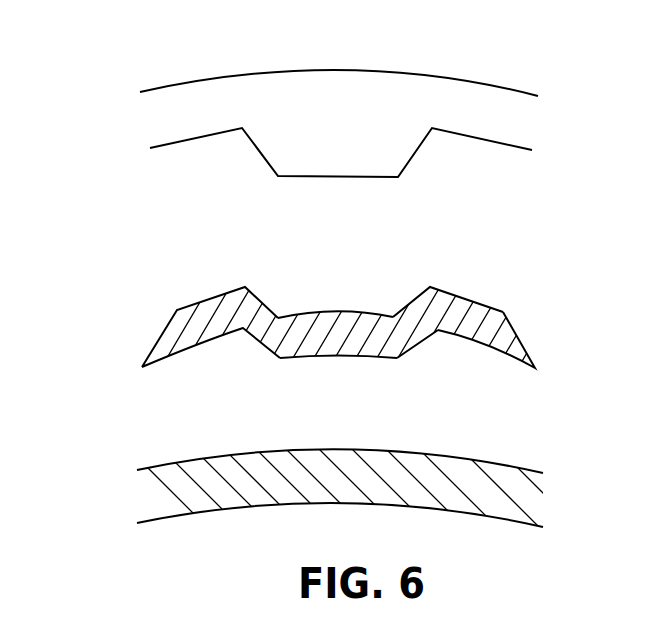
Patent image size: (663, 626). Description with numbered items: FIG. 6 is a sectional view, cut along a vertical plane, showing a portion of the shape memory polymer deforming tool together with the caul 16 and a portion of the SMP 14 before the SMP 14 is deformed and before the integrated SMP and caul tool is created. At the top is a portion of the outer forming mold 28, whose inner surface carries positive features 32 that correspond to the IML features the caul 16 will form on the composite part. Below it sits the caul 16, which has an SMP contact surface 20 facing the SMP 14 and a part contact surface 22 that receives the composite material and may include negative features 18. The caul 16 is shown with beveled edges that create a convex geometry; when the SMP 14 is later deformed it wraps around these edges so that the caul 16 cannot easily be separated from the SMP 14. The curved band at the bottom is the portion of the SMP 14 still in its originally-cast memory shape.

The shape memory polymer 14 is at (152, 490).
The caul 16 is at (180, 312).
The negative features 18 is at (337, 310).
The SMP contact surface 20 is at (457, 335).
The part contact surface 22 is at (452, 291).
The outer forming mold 28 is at (357, 58).
The positive features 32 is at (317, 153).